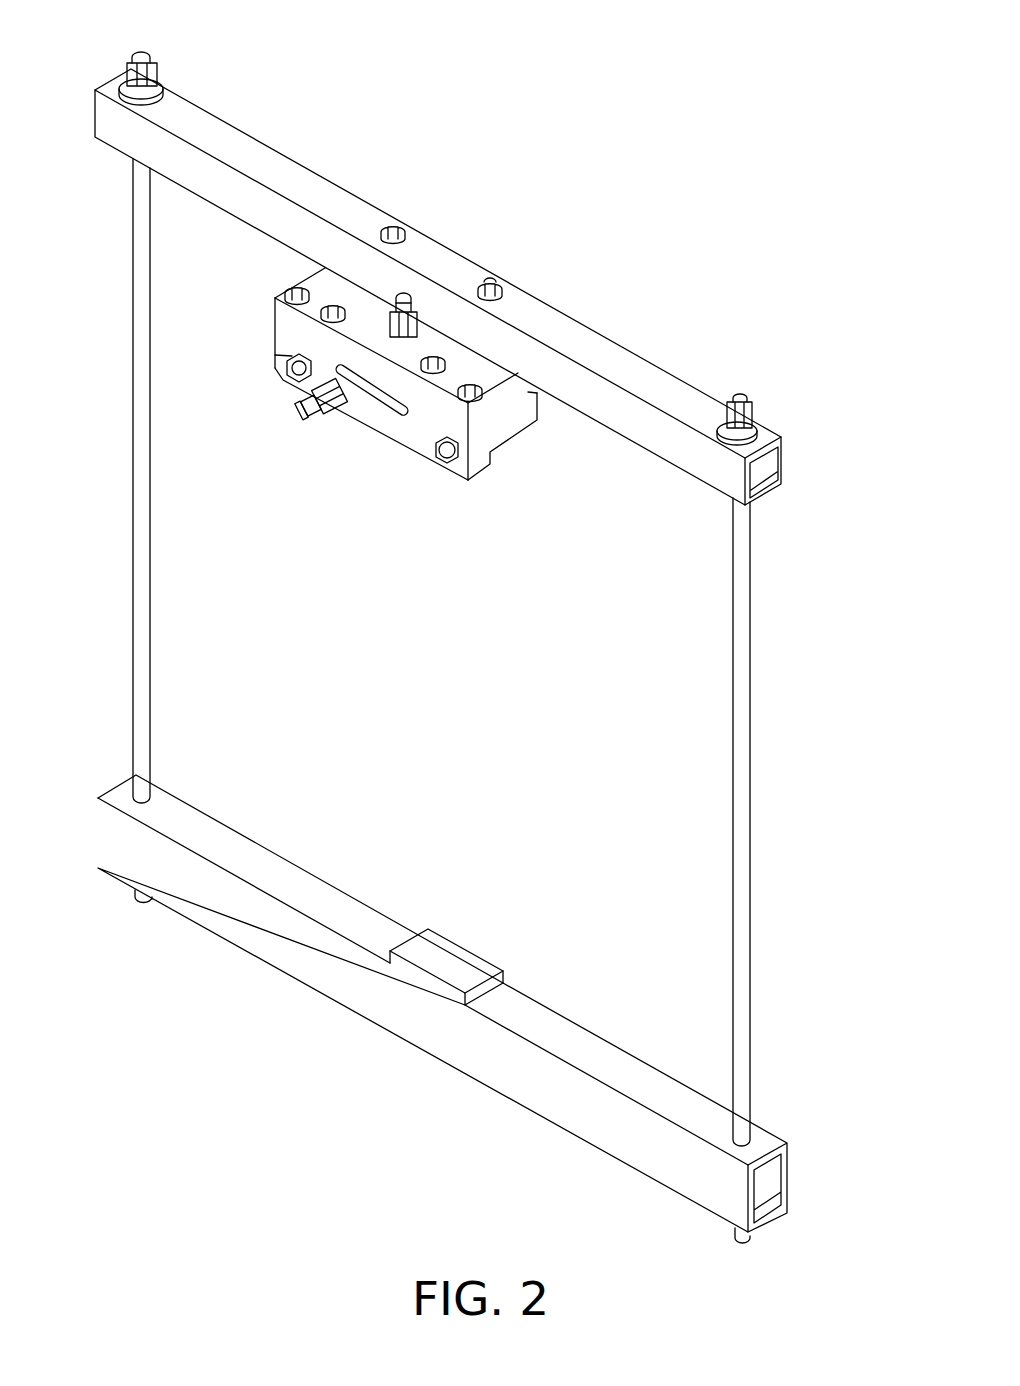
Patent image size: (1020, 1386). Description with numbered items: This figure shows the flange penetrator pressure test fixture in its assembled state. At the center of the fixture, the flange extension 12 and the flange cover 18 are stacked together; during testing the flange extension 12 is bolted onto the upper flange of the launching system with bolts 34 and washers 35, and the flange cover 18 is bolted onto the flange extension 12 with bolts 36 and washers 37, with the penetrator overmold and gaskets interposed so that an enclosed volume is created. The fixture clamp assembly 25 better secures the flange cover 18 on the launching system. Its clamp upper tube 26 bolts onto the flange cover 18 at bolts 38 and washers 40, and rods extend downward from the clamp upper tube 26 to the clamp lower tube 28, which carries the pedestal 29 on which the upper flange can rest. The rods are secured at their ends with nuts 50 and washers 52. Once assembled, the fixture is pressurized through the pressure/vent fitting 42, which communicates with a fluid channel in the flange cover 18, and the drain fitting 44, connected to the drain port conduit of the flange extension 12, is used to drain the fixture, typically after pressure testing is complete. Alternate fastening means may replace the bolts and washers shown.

The flange extension 12 is at (387, 438).
The flange cover 18 is at (273, 313).
The fixture clamp assembly 25 is at (298, 141).
The clamp upper tube 26 is at (632, 360).
The clamp lower tube 28 is at (300, 960).
The pedestal 29 is at (453, 955).
The bolts 34 is at (431, 458).
The washers 35 is at (447, 466).
The bolts 36 is at (530, 391).
The washers 37 is at (481, 396).
The bolts 38 is at (493, 278).
The washers 40 is at (504, 284).
The pressure/vent fitting 42 is at (410, 297).
The drain fitting 44 is at (300, 413).
The nuts 50 is at (144, 56).
The washers 52 is at (163, 66).